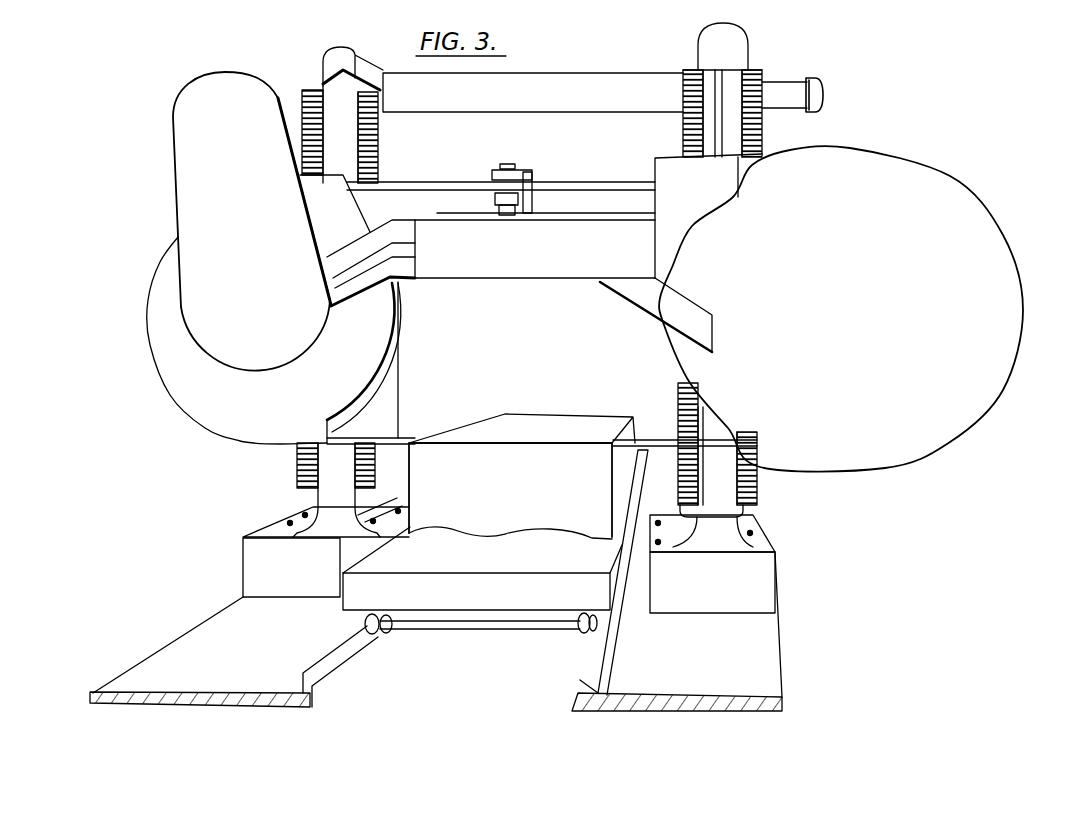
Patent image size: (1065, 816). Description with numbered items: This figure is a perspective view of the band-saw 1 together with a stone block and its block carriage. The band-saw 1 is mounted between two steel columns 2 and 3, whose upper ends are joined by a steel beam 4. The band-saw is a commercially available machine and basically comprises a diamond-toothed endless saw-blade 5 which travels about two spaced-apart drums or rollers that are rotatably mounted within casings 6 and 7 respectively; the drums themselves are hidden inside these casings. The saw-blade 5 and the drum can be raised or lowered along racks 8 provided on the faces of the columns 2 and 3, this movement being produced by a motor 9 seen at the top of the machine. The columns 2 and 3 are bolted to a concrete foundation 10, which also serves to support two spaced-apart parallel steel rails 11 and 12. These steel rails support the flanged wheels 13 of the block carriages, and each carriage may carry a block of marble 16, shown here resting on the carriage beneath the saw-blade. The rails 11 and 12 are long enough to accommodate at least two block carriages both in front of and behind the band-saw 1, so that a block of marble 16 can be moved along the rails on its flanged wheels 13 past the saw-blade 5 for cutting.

The band-saw 1 is at (577, 367).
The steel column 2 is at (312, 103).
The steel column 3 is at (733, 140).
The steel beam 4 is at (538, 88).
The diamond-toothed endless saw-blade 5 is at (577, 183).
The casing 6 is at (223, 413).
The casing 7 is at (1003, 313).
The rack 8 is at (757, 492).
The motor 9 is at (793, 93).
The concrete foundation 10 is at (760, 580).
The steel rail 11 is at (332, 677).
The steel rail 12 is at (580, 673).
The flanged wheel 13 is at (578, 633).
The block of marble 16 is at (524, 497).